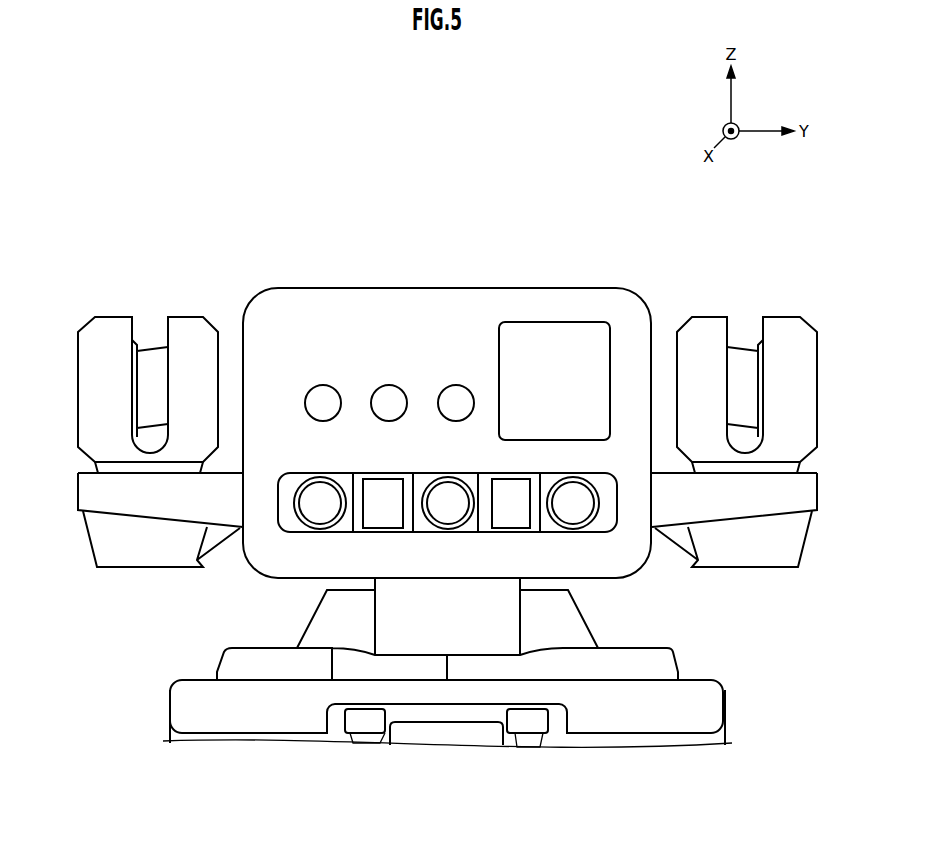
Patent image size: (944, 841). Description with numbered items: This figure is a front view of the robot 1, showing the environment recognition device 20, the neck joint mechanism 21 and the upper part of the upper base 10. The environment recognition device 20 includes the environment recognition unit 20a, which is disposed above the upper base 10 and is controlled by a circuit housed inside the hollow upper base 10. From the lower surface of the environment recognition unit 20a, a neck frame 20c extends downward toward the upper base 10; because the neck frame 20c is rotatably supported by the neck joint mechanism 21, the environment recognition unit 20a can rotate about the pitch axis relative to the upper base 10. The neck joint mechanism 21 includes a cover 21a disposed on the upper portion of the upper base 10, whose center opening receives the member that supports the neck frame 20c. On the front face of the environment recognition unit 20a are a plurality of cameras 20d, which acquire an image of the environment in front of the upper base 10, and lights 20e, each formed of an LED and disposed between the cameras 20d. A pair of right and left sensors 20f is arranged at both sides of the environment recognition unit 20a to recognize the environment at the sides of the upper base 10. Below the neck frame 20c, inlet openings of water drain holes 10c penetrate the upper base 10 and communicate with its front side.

The apparatus 1 is at (667, 158).
The upper base 10 is at (712, 710).
The water drain holes 10c is at (520, 730).
The environment recognition device 20 is at (561, 235).
The environment recognition unit 20a is at (470, 297).
The neck frame 20c is at (388, 627).
The cameras 20d is at (573, 515).
The lights 20e is at (510, 500).
The right and left sensors 20f is at (840, 368).
The neck joint mechanism 21 is at (642, 642).
The cover 21a is at (573, 628).